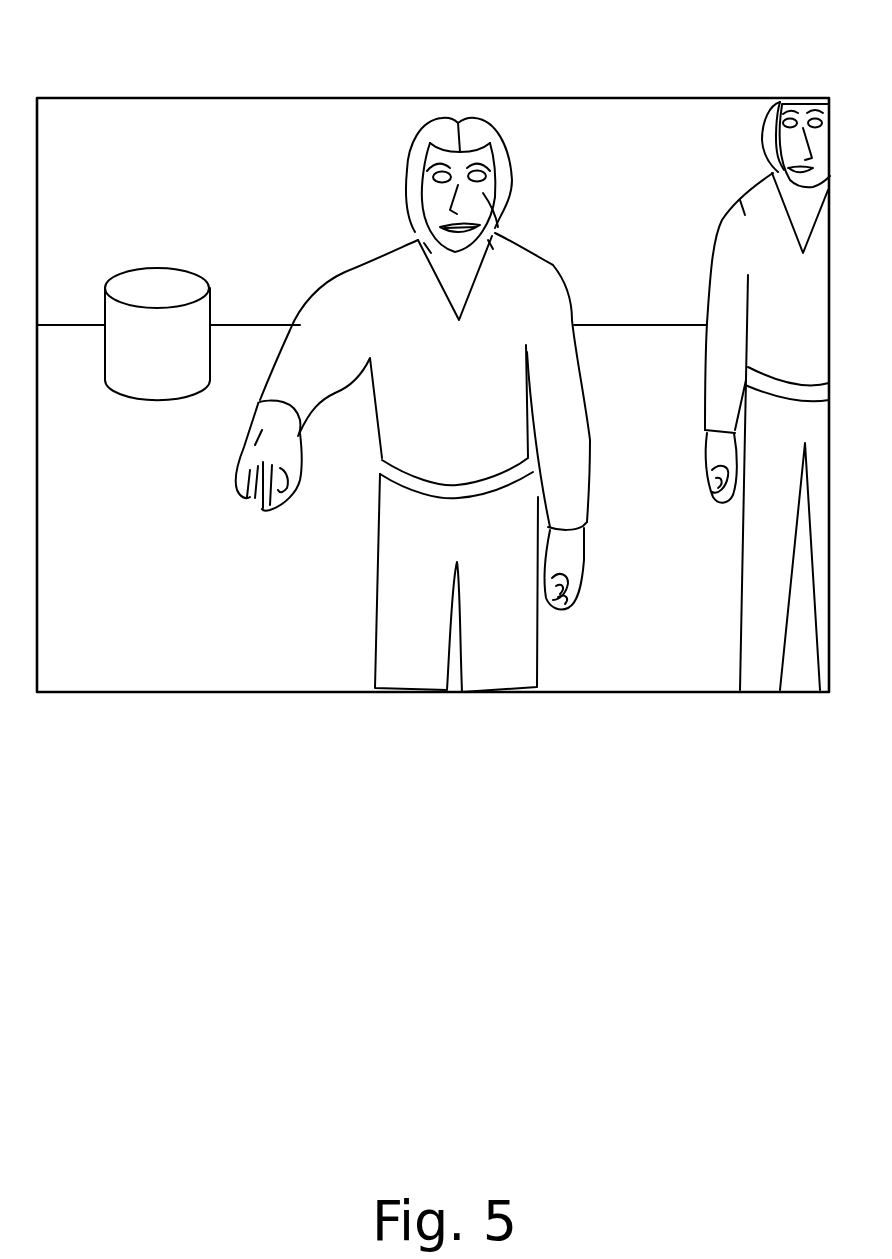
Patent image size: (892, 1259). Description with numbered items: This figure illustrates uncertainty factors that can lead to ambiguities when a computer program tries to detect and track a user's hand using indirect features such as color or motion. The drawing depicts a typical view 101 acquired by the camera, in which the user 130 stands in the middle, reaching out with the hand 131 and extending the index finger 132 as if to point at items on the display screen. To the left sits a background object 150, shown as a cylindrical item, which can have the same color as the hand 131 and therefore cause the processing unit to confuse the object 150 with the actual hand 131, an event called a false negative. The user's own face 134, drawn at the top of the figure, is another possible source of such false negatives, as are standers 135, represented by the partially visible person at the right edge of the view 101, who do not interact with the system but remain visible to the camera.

The view 101 is at (583, 105).
The background object 150 is at (142, 278).
The user 130 is at (380, 275).
The face 134 is at (495, 220).
The hand 131 is at (263, 428).
The index finger 132 is at (266, 508).
The standers 135 is at (745, 210).